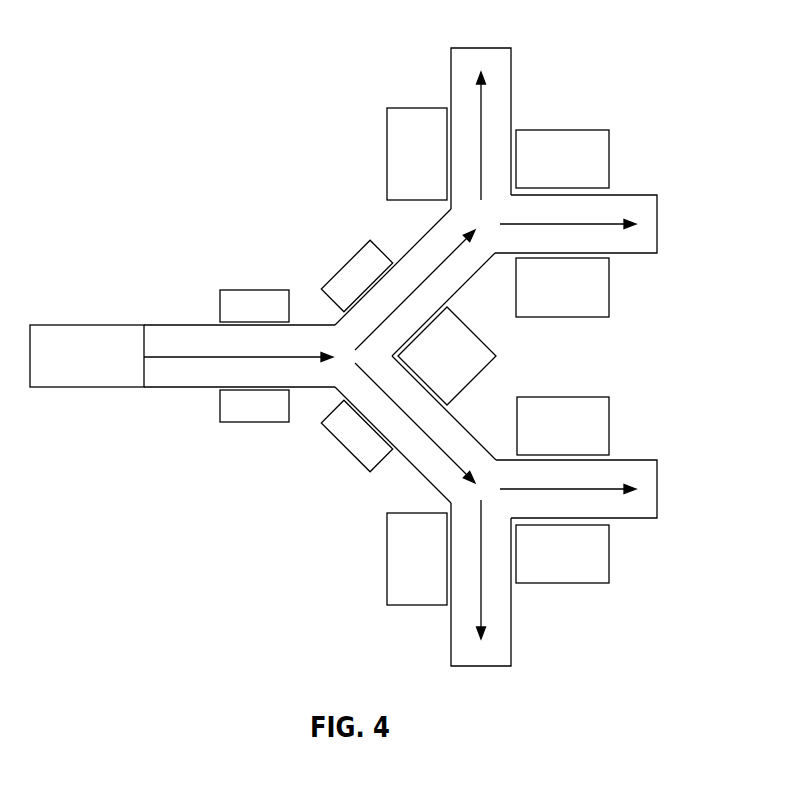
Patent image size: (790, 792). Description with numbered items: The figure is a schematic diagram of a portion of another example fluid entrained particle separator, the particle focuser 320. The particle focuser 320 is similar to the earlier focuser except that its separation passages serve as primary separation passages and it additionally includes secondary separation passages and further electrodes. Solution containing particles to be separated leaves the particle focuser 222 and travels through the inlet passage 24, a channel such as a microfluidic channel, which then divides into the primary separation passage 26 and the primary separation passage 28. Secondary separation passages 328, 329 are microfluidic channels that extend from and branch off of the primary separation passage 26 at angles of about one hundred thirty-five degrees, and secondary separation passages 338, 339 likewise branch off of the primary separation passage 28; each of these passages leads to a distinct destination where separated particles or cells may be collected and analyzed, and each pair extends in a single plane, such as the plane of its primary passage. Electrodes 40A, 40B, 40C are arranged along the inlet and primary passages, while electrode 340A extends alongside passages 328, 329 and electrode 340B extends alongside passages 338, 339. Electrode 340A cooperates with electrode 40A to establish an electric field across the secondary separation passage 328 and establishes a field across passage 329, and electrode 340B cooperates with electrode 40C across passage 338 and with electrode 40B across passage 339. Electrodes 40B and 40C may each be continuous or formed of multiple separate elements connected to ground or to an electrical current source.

The fluid entrained particle focuser 320 is at (336, 28).
The particle focuser 222 is at (87, 325).
The inlet passage 24 is at (173, 388).
The primary separation passage 26 is at (420, 242).
The primary separation passage 28 is at (420, 474).
The secondary separation passage 328 is at (482, 48).
The secondary separation passage 329 is at (657, 220).
The secondary separation passage 338 is at (657, 490).
The secondary separation passage 339 is at (511, 638).
The electrode 40A is at (387, 158).
The electrode 40B is at (253, 422).
The electrode 40C is at (487, 343).
The electrode 340A is at (562, 130).
The electrode 340B is at (609, 555).